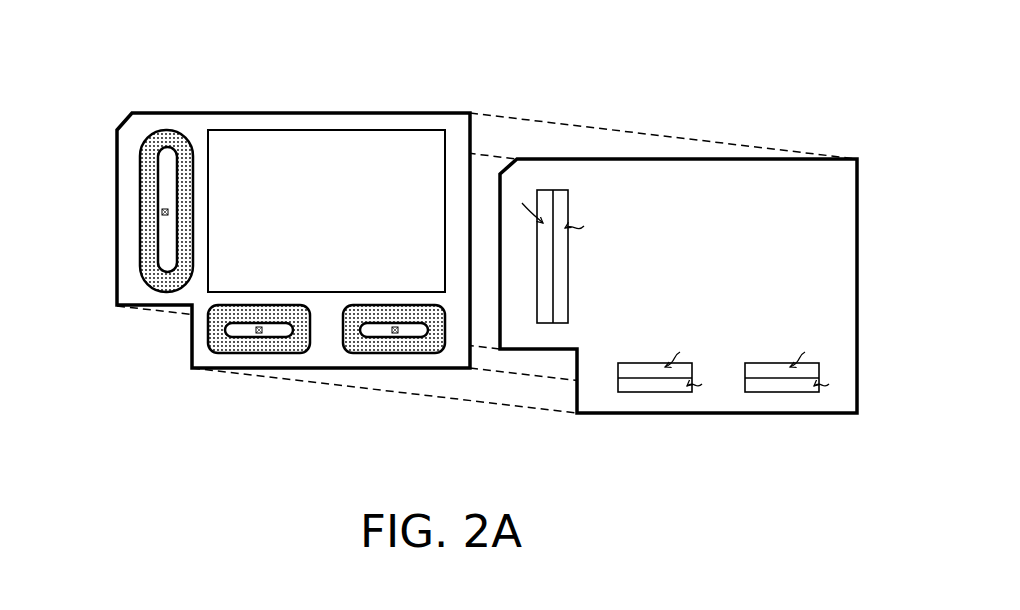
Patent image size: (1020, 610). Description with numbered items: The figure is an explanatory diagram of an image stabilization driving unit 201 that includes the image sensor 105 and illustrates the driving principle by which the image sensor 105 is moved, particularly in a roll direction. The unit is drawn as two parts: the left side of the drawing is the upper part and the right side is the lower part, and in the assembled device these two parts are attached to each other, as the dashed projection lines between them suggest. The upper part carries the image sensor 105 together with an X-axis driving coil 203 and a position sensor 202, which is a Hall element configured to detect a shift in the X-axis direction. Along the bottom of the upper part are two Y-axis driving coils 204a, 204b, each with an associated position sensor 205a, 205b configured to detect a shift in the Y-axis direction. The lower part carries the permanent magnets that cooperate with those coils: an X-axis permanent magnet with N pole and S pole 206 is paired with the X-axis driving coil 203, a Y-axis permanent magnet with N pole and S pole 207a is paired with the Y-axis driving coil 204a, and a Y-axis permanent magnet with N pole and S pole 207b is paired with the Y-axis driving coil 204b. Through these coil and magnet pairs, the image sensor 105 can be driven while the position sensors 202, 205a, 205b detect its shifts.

The image stabilization driving unit 201 is at (212, 113).
The image sensor 105 is at (432, 130).
The position sensor 202 is at (163, 215).
The X-axis driving coil 203 is at (157, 292).
The Y-axis driving coil 204a is at (222, 353).
The position sensor 205a is at (262, 328).
The Y-axis driving coil 204b is at (353, 353).
The position sensor 205b is at (398, 328).
The X-axis permanent magnet N pole and S pole 206 is at (568, 243).
The Y-axis permanent magnet N pole and S pole 207a is at (667, 392).
The Y-axis permanent magnet N pole and S pole 207b is at (800, 392).